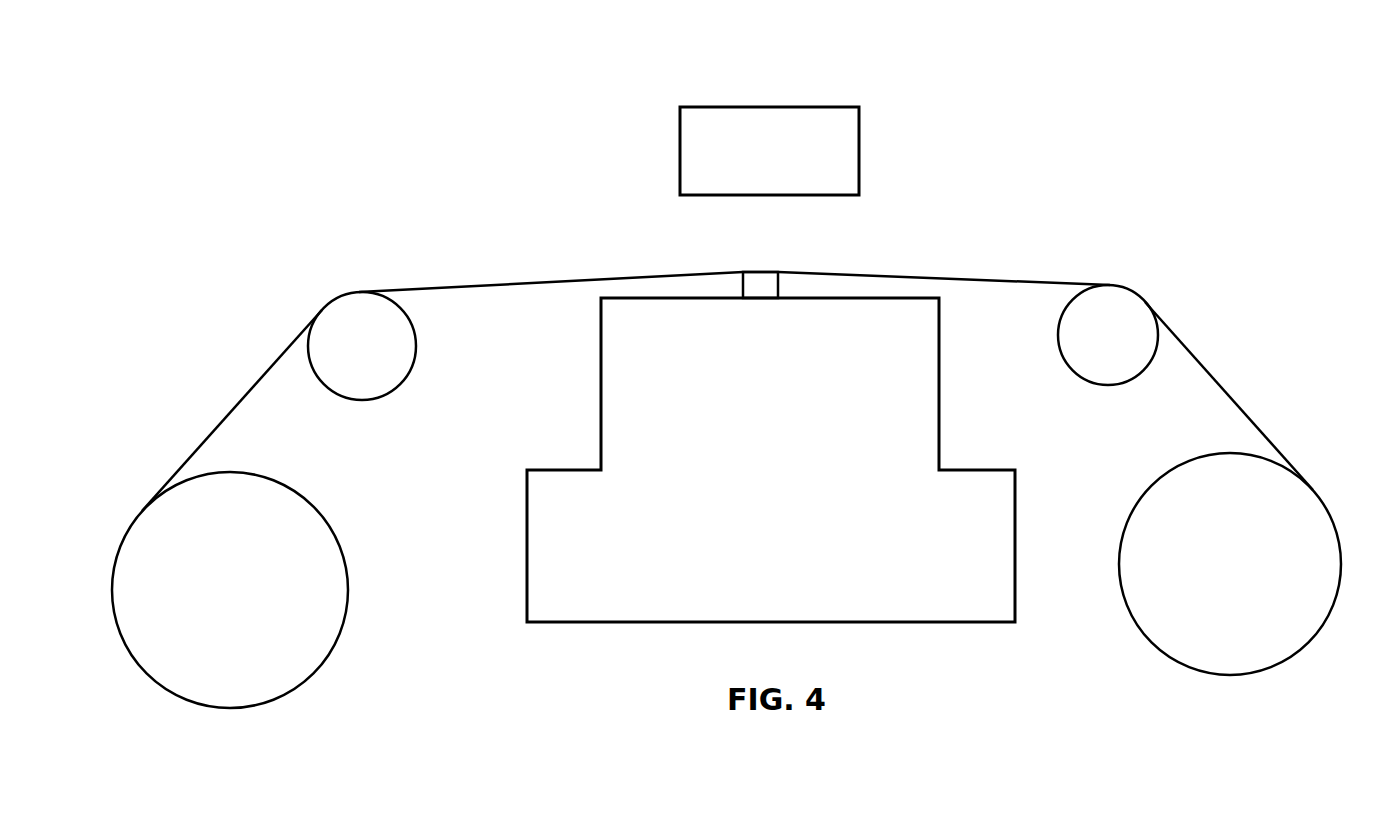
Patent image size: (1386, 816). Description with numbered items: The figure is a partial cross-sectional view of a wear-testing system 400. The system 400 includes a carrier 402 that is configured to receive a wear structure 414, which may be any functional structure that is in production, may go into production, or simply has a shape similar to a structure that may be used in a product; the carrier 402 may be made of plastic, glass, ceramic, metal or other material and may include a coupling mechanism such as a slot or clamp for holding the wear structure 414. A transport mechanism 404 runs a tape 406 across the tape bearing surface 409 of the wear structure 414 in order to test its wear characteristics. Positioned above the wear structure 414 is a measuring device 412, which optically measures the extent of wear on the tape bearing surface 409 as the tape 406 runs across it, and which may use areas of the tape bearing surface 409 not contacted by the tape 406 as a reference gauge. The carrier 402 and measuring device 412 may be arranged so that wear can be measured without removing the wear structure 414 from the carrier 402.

The system 400 is at (423, 91).
The carrier 402 is at (967, 593).
The transport mechanism 404 is at (307, 680).
The tape 406 is at (448, 289).
The tape bearing surface 409 is at (746, 263).
The measuring device 412 is at (832, 115).
The wear structure 414 is at (778, 285).